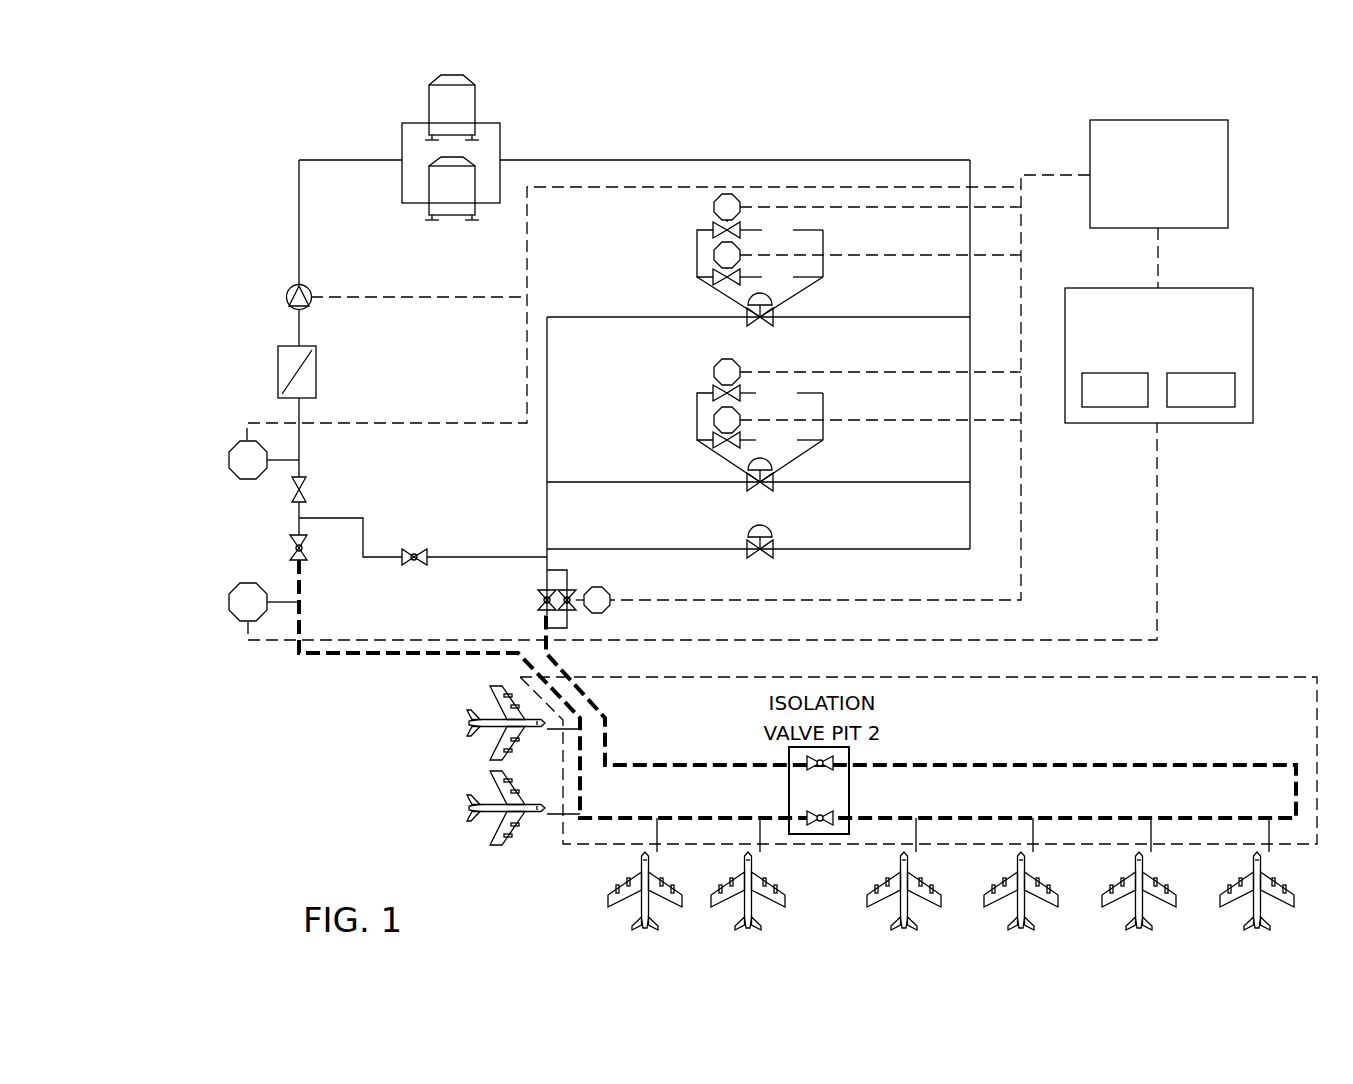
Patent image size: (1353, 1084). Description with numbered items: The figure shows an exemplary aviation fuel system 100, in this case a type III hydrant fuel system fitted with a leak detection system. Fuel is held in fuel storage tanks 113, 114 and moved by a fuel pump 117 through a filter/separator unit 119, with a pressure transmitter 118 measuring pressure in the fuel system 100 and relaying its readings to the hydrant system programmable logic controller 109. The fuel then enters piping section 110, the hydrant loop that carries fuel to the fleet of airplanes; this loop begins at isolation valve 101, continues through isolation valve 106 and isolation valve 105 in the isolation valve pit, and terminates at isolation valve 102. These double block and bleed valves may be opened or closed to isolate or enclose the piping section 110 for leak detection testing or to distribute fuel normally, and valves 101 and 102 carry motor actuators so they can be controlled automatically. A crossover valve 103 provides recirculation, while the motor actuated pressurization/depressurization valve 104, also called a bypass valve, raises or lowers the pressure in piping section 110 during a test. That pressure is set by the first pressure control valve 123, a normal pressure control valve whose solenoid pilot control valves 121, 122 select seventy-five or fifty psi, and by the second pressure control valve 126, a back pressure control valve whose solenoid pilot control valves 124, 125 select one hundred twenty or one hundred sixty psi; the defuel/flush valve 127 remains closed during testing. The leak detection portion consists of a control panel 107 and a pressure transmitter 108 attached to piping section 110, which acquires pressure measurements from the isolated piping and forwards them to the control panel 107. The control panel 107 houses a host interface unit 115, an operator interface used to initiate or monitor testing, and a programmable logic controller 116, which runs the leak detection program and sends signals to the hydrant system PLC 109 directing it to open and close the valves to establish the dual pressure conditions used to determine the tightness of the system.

The fuel system 100 is at (145, 161).
The isolation valve 101 is at (290, 546).
The isolation valve 102 is at (538, 592).
The crossover valve 103 is at (410, 567).
The motor actuated pressurization/depressurization valve 104 is at (578, 590).
The isolation valve 105 is at (835, 760).
The isolation valve 106 is at (815, 826).
The control panel 107 is at (1194, 379).
The pressure transmitter 108 is at (230, 614).
The hydrant system programmable logic controller 109 is at (1228, 145).
The piping section 110 is at (1270, 677).
The fuel storage tank 113 is at (429, 190).
The fuel storage tank 114 is at (429, 110).
The host interface unit 115 is at (1105, 408).
The programmable logic controller 116 is at (1208, 408).
The fuel pump 117 is at (287, 292).
The pressure transmitter 118 is at (229, 455).
The filter/separator unit 119 is at (278, 362).
The solenoid pilot control valve 121 is at (718, 285).
The solenoid pilot control valve 122 is at (713, 228).
The first pressure control valve 123 is at (773, 316).
The solenoid pilot control valve 124 is at (718, 448).
The solenoid pilot control valve 125 is at (713, 392).
The second pressure control valve 126 is at (773, 481).
The defuel/flush valve 127 is at (773, 548).